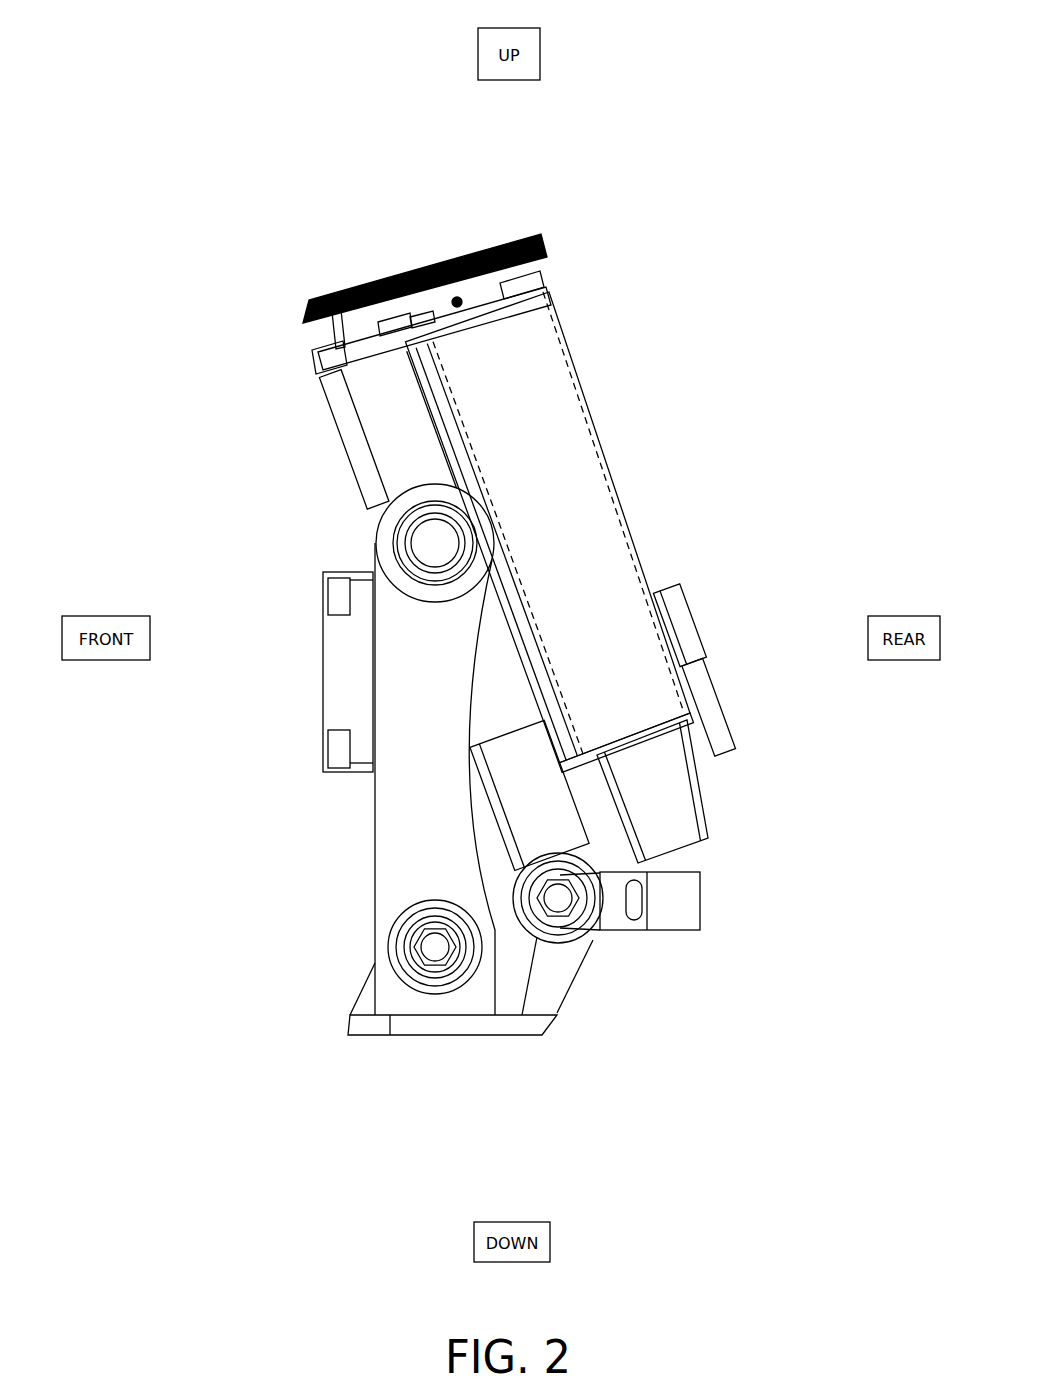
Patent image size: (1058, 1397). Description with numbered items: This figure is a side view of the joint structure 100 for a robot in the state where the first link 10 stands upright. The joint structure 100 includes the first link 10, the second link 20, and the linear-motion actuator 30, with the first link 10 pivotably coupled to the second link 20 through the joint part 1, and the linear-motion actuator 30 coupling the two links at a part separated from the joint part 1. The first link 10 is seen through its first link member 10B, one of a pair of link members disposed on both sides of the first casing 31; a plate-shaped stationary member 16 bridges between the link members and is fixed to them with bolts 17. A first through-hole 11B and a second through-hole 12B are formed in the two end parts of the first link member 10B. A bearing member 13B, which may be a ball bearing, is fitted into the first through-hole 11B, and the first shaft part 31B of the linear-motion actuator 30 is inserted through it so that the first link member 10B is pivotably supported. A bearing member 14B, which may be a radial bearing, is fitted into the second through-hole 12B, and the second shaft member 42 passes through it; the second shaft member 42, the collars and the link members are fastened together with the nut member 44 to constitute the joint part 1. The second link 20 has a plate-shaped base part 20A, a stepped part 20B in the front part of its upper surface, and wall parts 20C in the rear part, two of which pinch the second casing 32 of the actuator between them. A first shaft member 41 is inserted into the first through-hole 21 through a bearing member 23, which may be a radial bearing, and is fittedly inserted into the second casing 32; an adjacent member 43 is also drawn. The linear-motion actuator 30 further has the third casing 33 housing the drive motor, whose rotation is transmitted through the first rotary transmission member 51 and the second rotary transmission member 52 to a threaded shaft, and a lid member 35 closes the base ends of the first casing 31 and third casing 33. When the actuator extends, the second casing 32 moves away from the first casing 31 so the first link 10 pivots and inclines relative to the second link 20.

The joint structure 100 is at (522, 21).
The second rotary transmission member 52 is at (348, 302).
The first through-hole 11B is at (435, 543).
The first rotary transmission member 51 is at (460, 265).
The linear-motion actuator 30 is at (318, 376).
The lid member 35 is at (548, 306).
The first casing 31 is at (385, 432).
The third casing 33 is at (565, 454).
The bearing member 13B is at (398, 520).
The first shaft part 31B is at (432, 545).
The bolts 17 is at (340, 597).
The first link 10 is at (320, 658).
The stationary member 16 is at (340, 694).
The first link member 10B is at (388, 812).
The second casing 32 is at (555, 790).
The nut member 44 is at (405, 905).
The joint part 1 is at (372, 930).
The link 43 is at (700, 880).
The bearing member 14B is at (397, 960).
The bearing member 23 is at (565, 935).
The stepped part 20B is at (373, 988).
The wall parts 20C is at (565, 968).
The second link 20 is at (360, 1042).
The second through-hole 12B is at (393, 957).
The second shaft member 42 is at (435, 947).
The base part 20A is at (472, 1015).
The first through-hole 21 is at (560, 910).
The first shaft member 41 is at (558, 898).